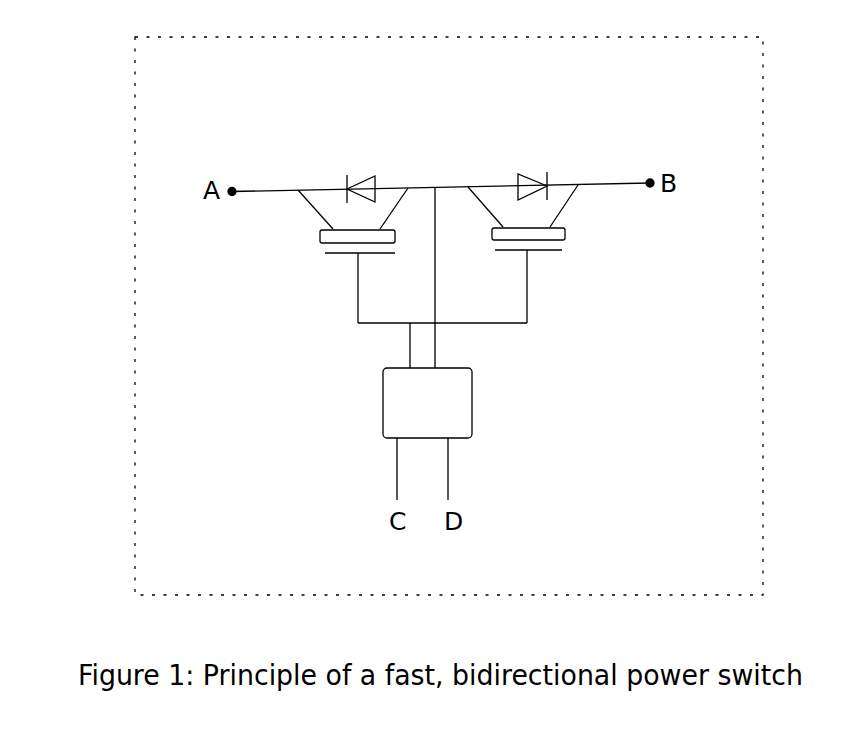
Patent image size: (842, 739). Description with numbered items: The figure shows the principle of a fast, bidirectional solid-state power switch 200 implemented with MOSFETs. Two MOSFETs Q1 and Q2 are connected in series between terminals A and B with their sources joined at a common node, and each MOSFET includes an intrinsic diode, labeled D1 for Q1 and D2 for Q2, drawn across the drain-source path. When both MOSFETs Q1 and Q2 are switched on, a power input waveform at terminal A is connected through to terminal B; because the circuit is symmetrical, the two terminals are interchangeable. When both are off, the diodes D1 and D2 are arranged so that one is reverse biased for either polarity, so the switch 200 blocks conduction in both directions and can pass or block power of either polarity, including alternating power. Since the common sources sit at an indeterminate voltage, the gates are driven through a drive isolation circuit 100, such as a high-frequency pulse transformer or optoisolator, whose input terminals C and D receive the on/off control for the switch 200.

The bidirectional switch 200 is at (207, 70).
The drive isolation circuit 100 is at (445, 407).
The intrinsic diode D1 is at (350, 170).
The intrinsic diode D2 is at (530, 170).
The MOSFET Q1 is at (318, 249).
The MOSFET Q2 is at (566, 245).